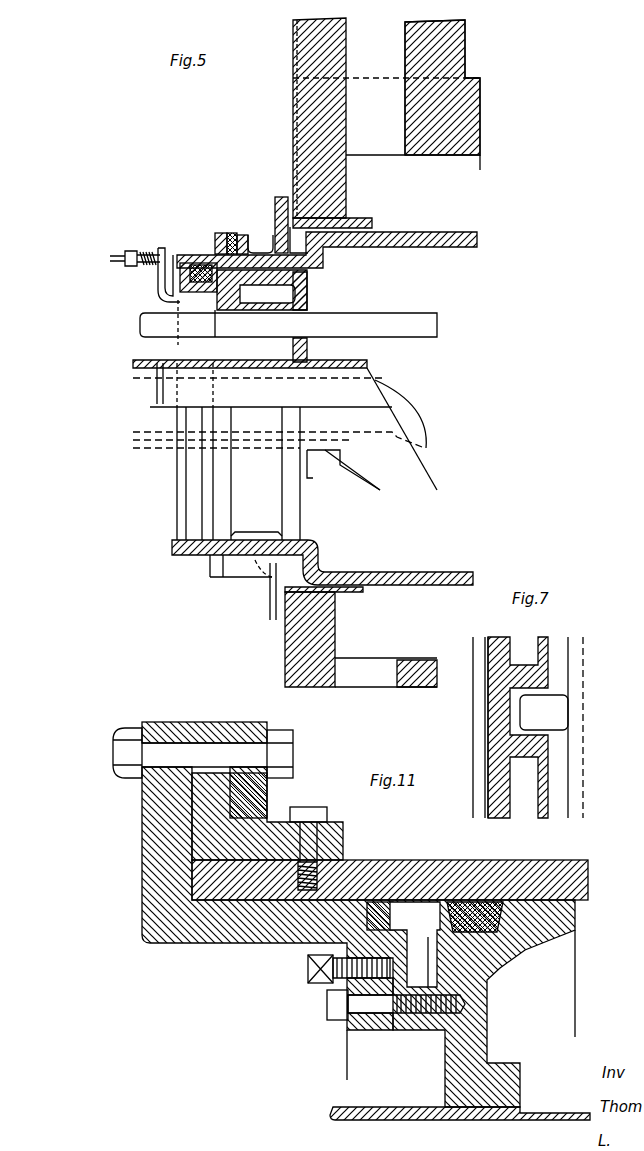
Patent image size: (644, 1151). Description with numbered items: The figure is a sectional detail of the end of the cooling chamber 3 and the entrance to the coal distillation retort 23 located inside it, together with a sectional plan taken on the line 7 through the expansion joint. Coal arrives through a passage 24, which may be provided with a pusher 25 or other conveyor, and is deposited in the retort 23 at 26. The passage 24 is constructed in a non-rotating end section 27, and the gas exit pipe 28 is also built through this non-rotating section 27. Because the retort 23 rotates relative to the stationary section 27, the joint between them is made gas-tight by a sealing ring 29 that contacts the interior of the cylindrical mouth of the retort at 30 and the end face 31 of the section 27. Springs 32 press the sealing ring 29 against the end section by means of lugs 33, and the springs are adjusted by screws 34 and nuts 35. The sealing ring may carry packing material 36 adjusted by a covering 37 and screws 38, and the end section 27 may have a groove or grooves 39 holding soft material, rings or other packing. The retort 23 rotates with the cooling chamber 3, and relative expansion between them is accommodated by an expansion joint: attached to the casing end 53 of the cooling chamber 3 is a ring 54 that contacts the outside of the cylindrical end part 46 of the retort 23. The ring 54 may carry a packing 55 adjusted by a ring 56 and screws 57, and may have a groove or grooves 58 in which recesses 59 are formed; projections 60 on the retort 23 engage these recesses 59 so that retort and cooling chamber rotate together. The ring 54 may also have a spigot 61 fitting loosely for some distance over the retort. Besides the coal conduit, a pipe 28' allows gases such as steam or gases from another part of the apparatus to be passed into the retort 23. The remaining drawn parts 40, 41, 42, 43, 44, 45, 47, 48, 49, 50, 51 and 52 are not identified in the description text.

In FIG. 5, the cooling chamber 3 is at (402, 413).
In FIG. 5, the section line 7— 7 is at (215, 249).
In FIG. 5, the retort 23 is at (285, 441).
In FIG. 5, the passage 24 is at (148, 418).
In FIG. 5, the pusher 25 is at (163, 390).
In FIG. 5, the deposit point 26 is at (407, 565).
In FIG. 5, the non-rotating end section 27 is at (267, 288).
In FIG. 5, the gas exit pipe 28 is at (97, 392).
In FIG. 5, the gas introduction pipe 28' is at (288, 318).
In FIG. 5, the sealing ring 29 is at (205, 300).
In FIG. 5, the contact point in retort mouth 30 is at (188, 266).
In FIG. 5, the end face 31 is at (218, 290).
In FIG. 5, the springs 32 is at (170, 265).
In FIG. 5, the lugs 33 is at (168, 359).
In FIG. 5, the screws 34 is at (126, 258).
In FIG. 5, the nuts 35 is at (130, 252).
In FIG. 5, the packing material 36 is at (178, 270).
In FIG. 5, the covering 37 is at (186, 300).
In FIG. 5, the screws 38 is at (168, 288).
In FIG. 5, the groove 39 is at (308, 282).
In FIG. 11, the base rail 40 is at (460, 1032).
In FIG. 11, the body 41 is at (178, 930).
In FIG. 11, the body upright 42 is at (150, 849).
In FIG. 11, the clamp bar 43 is at (222, 731).
In FIG. 11, the bolt 44 is at (280, 752).
In FIG. 11, the block 45 is at (205, 786).
In FIG. 5, the cylindrical end part 46 is at (325, 260).
In FIG. 11, the cylindrical end part 46 is at (200, 882).
In FIG. 11, the screw 47 is at (305, 818).
In FIG. 11, the packing 48 is at (468, 905).
In FIG. 11, the slot 49 is at (408, 915).
In FIG. 11, the insert 50 is at (362, 930).
In FIG. 11, the block 51 is at (390, 1031).
In FIG. 11, the bolt 52 is at (330, 1003).
In FIG. 5, the casing end 53 is at (292, 101).
In FIG. 5, the ring 54 is at (280, 230).
In FIG. 5, the packing 55 is at (241, 236).
In FIG. 5, the ring 56 is at (218, 237).
In FIG. 5, the screws 57 is at (215, 243).
In FIG. 5, the groove 58 is at (253, 230).
In FIG. 7, the recesses 59 is at (510, 695).
In FIG. 7, the projections 60 is at (544, 712).
In FIG. 5, the spigot 61 is at (293, 590).